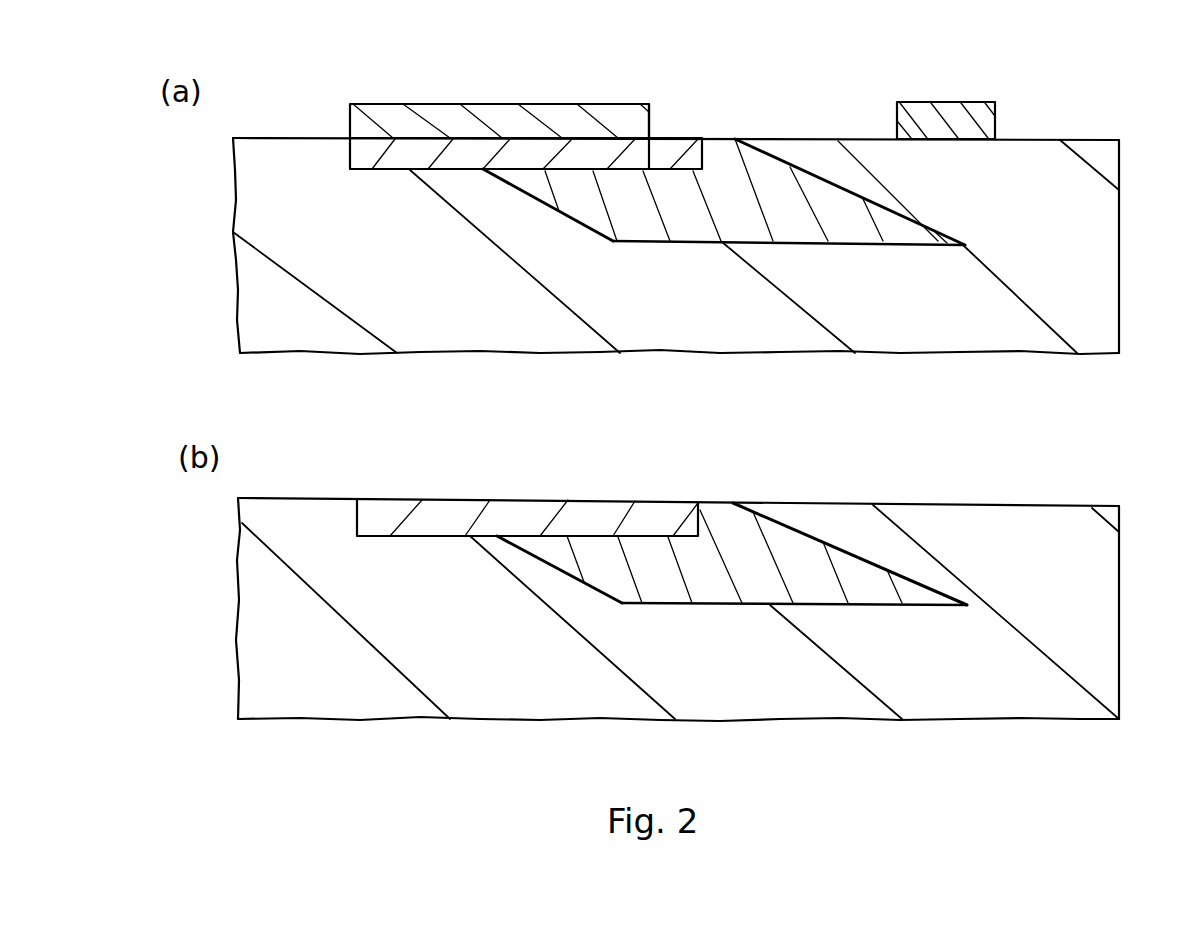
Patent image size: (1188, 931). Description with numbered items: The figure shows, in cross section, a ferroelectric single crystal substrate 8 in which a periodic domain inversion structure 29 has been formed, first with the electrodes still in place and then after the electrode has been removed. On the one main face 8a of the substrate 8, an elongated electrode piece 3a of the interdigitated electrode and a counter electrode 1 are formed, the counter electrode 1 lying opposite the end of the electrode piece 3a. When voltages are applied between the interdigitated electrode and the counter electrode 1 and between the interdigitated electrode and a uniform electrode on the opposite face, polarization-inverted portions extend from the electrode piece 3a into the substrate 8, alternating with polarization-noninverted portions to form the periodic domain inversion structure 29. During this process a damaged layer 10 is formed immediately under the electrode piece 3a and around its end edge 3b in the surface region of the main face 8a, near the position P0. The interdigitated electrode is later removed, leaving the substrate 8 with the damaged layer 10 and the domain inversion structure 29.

The substrate 8 is at (709, 429).
The one main face 8a is at (693, 266).
The electrode pieces 3a is at (499, 82).
The end edge 3b is at (701, 121).
The damaged layer 10 is at (526, 337).
The periodic domain inversion structure 29 is at (725, 330).
The counter electrode 1 is at (981, 108).
The reference position P0 is at (689, 228).